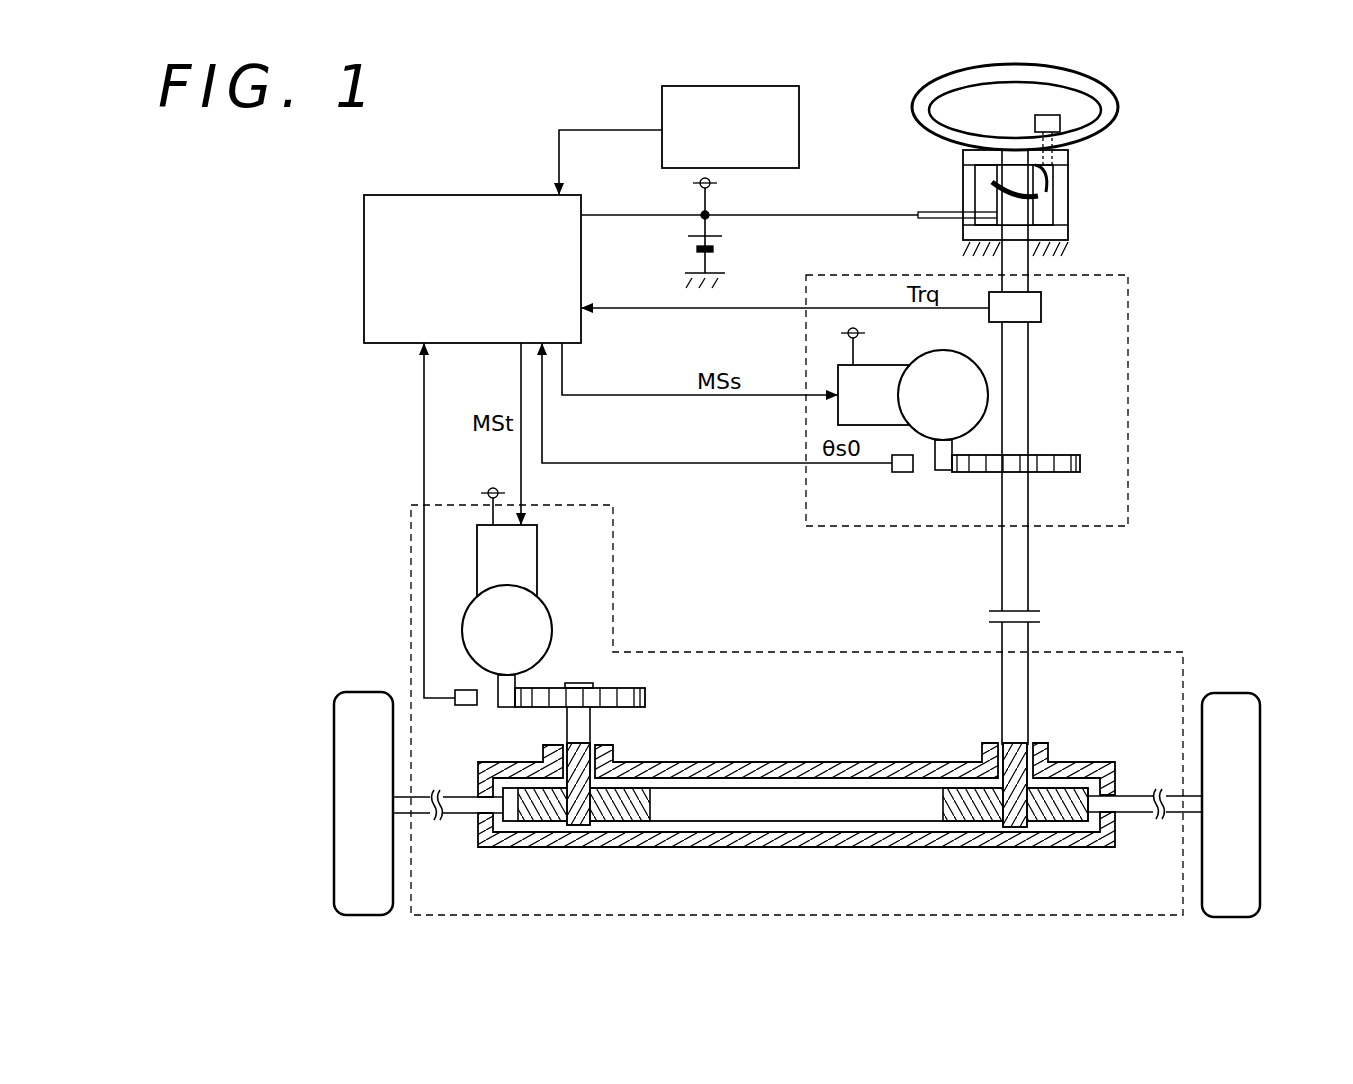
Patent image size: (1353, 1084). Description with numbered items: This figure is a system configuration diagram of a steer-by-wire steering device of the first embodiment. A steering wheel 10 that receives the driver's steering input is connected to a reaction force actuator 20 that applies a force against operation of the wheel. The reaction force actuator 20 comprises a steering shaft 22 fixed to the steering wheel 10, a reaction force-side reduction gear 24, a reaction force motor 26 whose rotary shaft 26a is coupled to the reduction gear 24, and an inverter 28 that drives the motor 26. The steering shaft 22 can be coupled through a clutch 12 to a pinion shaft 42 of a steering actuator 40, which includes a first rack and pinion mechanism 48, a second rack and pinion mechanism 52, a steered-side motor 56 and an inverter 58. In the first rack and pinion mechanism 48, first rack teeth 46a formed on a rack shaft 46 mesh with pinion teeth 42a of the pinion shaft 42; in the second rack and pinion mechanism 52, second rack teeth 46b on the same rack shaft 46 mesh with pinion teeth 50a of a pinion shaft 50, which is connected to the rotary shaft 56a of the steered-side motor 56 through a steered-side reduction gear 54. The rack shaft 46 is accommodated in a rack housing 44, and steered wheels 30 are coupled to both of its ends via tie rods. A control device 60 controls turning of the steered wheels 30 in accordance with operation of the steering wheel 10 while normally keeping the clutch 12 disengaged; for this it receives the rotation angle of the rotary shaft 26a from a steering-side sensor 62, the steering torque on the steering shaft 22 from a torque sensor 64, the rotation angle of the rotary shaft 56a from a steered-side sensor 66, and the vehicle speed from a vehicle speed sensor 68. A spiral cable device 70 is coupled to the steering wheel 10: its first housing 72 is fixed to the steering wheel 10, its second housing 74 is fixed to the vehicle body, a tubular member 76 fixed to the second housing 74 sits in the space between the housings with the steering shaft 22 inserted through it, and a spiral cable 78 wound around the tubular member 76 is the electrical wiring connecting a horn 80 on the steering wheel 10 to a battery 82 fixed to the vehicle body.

The steering wheel 10 is at (1118, 98).
The clutch 12 is at (1054, 598).
The reaction force actuator 20 is at (1130, 276).
The steering shaft 22 is at (1030, 372).
The reaction force-side reduction gear 24 is at (1062, 452).
The reaction force motor 26 is at (942, 348).
The rotary shaft 26a is at (945, 473).
The inverter 28 is at (881, 365).
The steered wheels 30 is at (362, 690).
The steering actuator 40 is at (1183, 645).
The pinion shaft 42 is at (1029, 697).
The pinion teeth 42a is at (1020, 737).
The rack housing 44 is at (1090, 757).
The rack shaft 46 is at (797, 843).
The first rack teeth 46a is at (1060, 822).
The second rack teeth 46b is at (652, 822).
The first rack and pinion mechanism 48 is at (1010, 857).
The pinion shaft 50 is at (594, 765).
The pinion teeth 50a is at (585, 738).
The second rack and pinion mechanism 52 is at (584, 860).
The steered-side reduction gear 54 is at (617, 683).
The steered-side motor 56 is at (552, 628).
The rotary shaft 56a is at (506, 710).
The inverter 58 is at (539, 557).
The control device 60 is at (583, 270).
The steering-side sensor 62 is at (900, 475).
The torque sensor 64 is at (1041, 307).
The steered-side sensor 66 is at (466, 708).
The vehicle speed sensor 68 is at (801, 128).
The spiral cable device 70 is at (1094, 202).
The first housing 72 is at (1068, 153).
The second housing 74 is at (1068, 208).
The tubular member 76 is at (1068, 234).
The spiral cable 78 is at (1056, 184).
The horn 80 is at (1046, 111).
The battery 82 is at (722, 236).